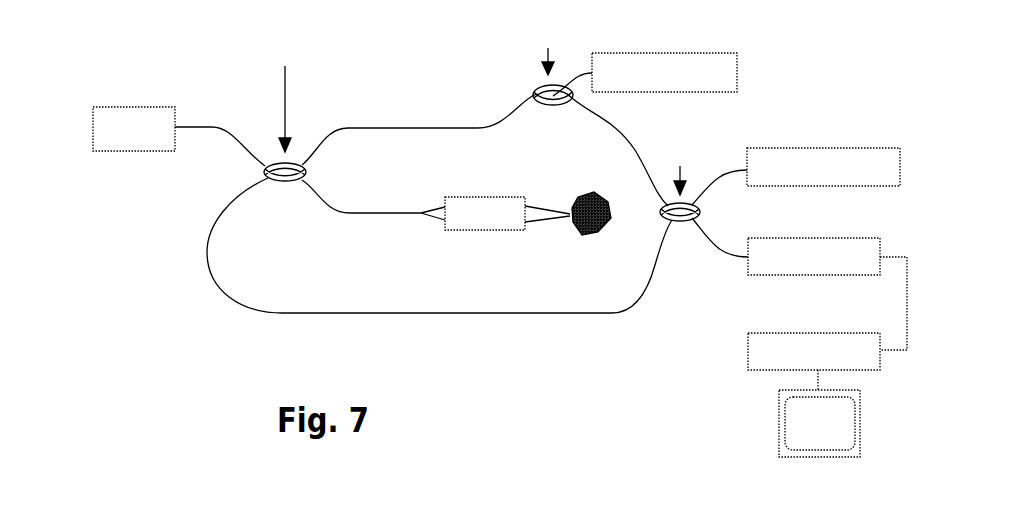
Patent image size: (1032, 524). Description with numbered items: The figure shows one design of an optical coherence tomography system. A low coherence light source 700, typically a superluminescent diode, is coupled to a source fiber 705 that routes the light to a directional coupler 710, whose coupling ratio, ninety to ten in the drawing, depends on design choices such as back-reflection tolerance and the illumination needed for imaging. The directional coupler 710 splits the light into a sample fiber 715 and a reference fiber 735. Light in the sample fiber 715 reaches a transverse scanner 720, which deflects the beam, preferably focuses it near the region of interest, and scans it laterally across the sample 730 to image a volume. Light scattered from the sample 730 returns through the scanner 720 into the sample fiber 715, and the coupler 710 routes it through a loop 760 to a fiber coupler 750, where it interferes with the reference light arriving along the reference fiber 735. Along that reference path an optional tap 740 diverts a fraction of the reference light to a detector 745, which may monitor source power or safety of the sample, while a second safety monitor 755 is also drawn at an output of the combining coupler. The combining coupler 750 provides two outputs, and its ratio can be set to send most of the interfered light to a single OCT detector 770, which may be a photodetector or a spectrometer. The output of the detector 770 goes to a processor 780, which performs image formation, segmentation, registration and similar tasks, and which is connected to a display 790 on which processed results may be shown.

The low coherence light source 700 is at (108, 97).
The source fiber 705 is at (228, 142).
The directional coupler 710 is at (280, 157).
The sample fiber 715 is at (370, 216).
The transverse scanner 720 is at (480, 197).
The sample 730 is at (577, 202).
The reference fiber 735 is at (462, 127).
The tap 740 is at (550, 113).
The detector 745 is at (745, 67).
The fiber coupler 750 is at (683, 228).
The safety monitor 755 is at (845, 146).
The loop 760 is at (212, 282).
The OCT detector 770 is at (840, 273).
The processor 780 is at (748, 368).
The display 790 is at (777, 430).